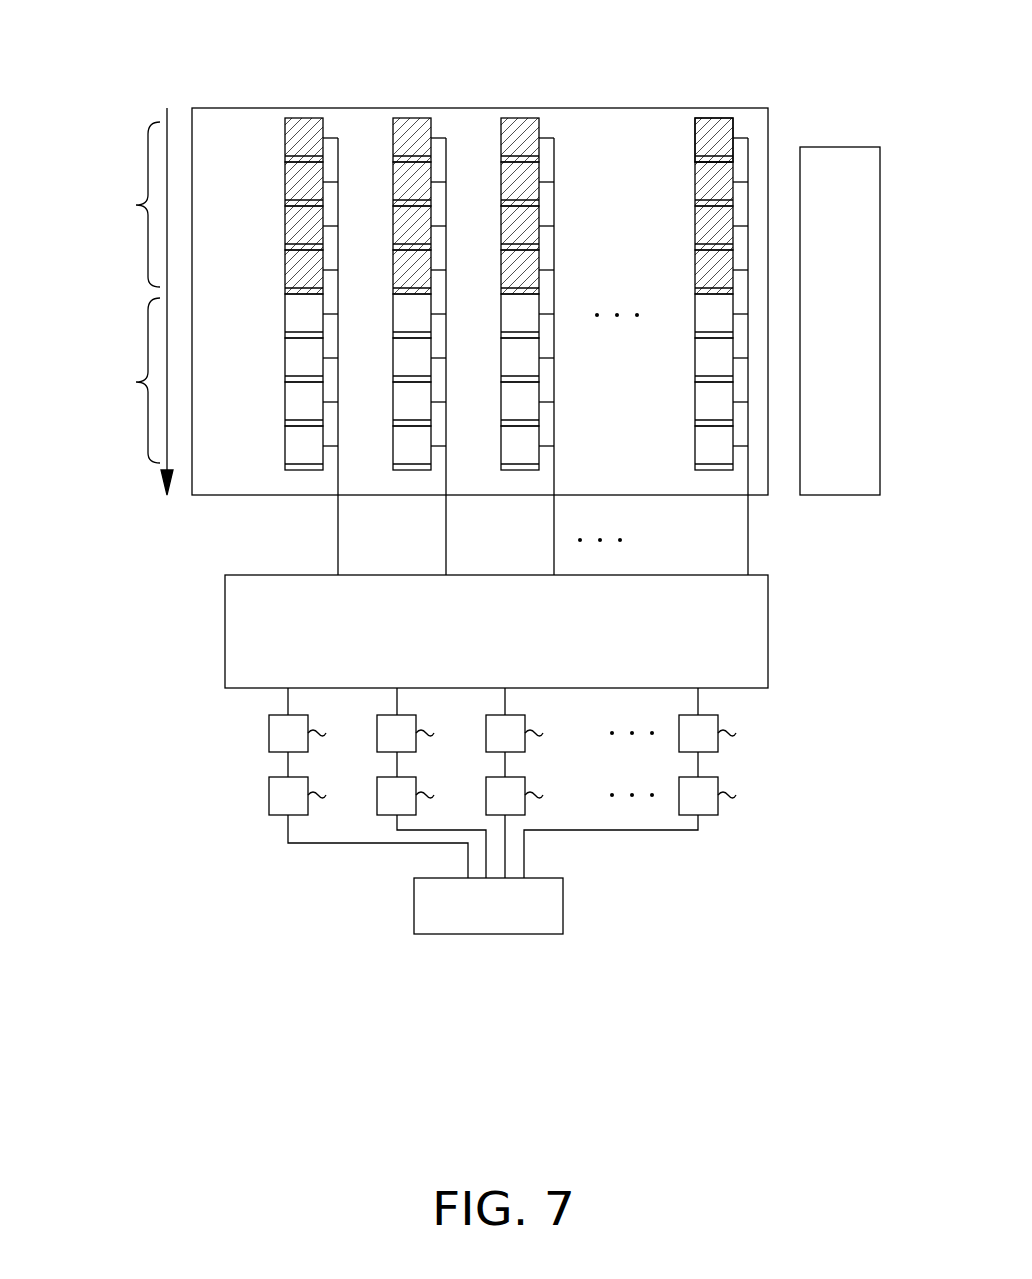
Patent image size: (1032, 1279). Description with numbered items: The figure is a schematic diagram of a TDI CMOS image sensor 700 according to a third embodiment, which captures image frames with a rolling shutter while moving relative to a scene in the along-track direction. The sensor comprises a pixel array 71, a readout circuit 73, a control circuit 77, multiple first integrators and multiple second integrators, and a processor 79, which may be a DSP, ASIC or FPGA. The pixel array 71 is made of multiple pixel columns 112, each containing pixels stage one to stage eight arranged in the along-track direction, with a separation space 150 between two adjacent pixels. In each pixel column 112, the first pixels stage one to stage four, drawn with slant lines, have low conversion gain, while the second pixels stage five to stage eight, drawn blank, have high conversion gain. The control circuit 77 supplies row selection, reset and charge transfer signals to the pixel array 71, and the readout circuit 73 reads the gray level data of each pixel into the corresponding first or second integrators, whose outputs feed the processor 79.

The TDI CMOS image sensor 700 is at (172, 33).
The pixel array 71 is at (480, 287).
The pixel column 112 is at (713, 122).
The separation space 150 is at (707, 291).
The control circuit 77 is at (850, 495).
The readout circuit 73 is at (768, 635).
The processor 79 is at (563, 908).